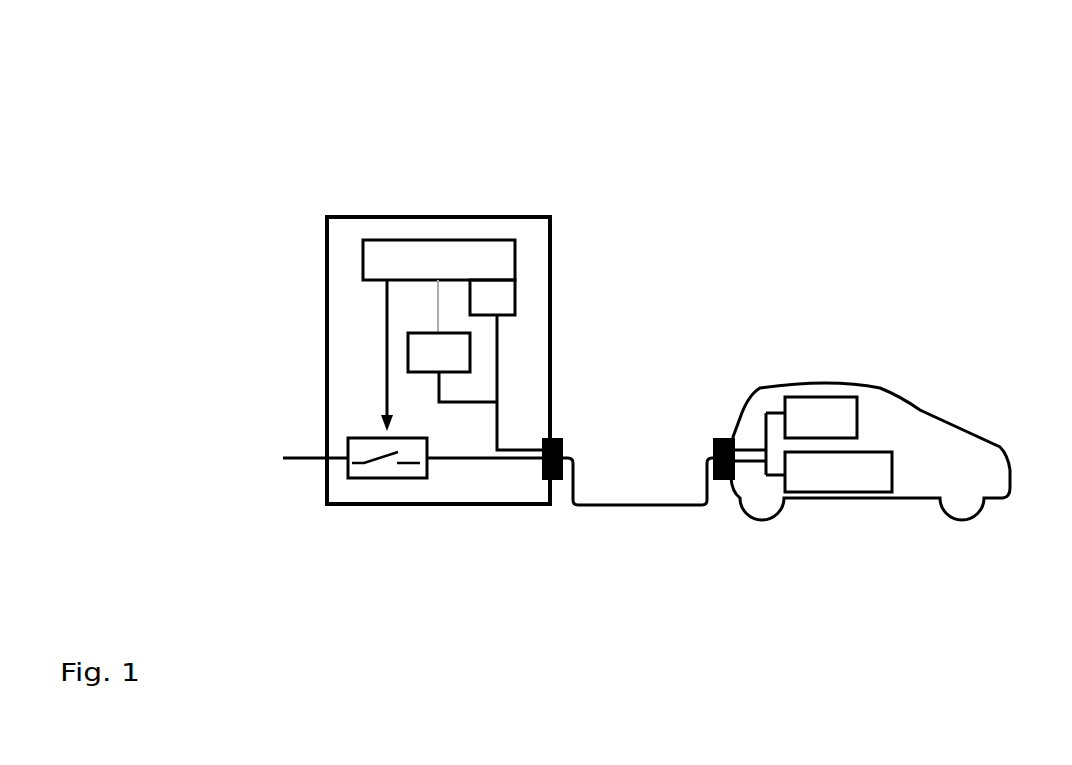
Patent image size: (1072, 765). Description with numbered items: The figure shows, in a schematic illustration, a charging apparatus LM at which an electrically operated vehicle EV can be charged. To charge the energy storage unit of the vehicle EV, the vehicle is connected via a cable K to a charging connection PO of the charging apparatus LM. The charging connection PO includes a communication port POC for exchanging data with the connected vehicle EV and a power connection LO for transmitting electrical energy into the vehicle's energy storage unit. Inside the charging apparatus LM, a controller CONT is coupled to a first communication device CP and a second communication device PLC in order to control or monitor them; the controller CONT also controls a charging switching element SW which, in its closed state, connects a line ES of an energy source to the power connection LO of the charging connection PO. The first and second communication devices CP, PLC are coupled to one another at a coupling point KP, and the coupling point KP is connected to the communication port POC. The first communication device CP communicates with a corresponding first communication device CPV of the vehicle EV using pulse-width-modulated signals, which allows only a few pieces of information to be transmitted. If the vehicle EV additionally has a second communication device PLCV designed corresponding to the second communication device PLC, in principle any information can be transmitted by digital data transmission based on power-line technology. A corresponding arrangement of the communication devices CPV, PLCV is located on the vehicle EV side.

The charging apparatus LM is at (498, 118).
The controller CONT is at (440, 240).
The first communication device CP is at (483, 298).
The second communication device PLC is at (408, 365).
The coupling point KP is at (494, 402).
The line of an energy source ES is at (292, 462).
The charging switching element SW is at (368, 480).
The power connection LO is at (529, 474).
The communication port POC is at (533, 430).
The charging connection PO is at (573, 432).
The cable K is at (645, 505).
The electrically operated vehicle EV is at (922, 402).
The second communication device of the vehicle PLCV is at (815, 397).
The corresponding first communication device of the vehicle CPV is at (838, 495).